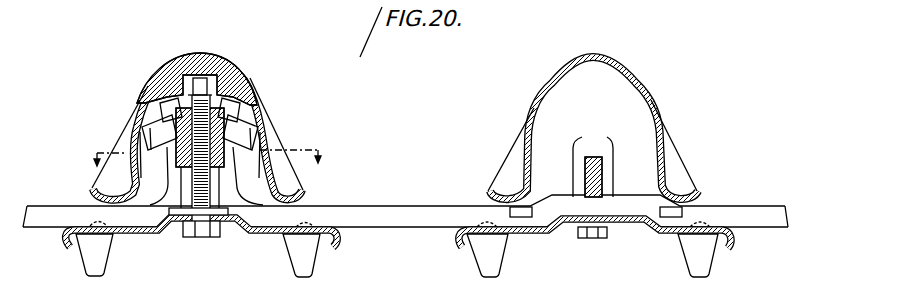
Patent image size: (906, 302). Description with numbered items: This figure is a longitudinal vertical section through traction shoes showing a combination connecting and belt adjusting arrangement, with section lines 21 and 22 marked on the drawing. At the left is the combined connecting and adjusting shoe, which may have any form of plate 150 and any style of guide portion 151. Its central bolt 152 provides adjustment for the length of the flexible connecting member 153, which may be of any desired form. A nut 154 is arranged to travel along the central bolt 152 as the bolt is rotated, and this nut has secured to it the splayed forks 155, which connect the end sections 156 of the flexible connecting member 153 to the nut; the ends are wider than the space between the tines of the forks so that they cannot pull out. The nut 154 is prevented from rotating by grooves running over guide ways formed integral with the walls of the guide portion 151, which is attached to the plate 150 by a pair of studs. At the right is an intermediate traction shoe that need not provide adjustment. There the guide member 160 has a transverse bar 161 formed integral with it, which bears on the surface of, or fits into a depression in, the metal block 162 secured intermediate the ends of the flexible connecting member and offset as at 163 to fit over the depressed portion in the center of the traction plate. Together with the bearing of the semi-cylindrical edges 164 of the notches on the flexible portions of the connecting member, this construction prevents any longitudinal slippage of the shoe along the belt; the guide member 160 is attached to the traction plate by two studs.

The bolt 21 is at (199, 77).
The section line 22 is at (207, 164).
The plate 150 is at (262, 235).
The guide portion 151 is at (143, 106).
The central bolt 152 is at (193, 199).
The connecting member 153 is at (381, 212).
The nut 154 is at (131, 133).
The splayed forks 155 is at (243, 120).
The end sections 156 is at (160, 87).
The guide member 160 is at (652, 107).
The transverse bar 161 is at (601, 158).
The metal block 162 is at (618, 222).
The offset 163 is at (549, 209).
The semi-cylindrical edges 164 is at (494, 192).